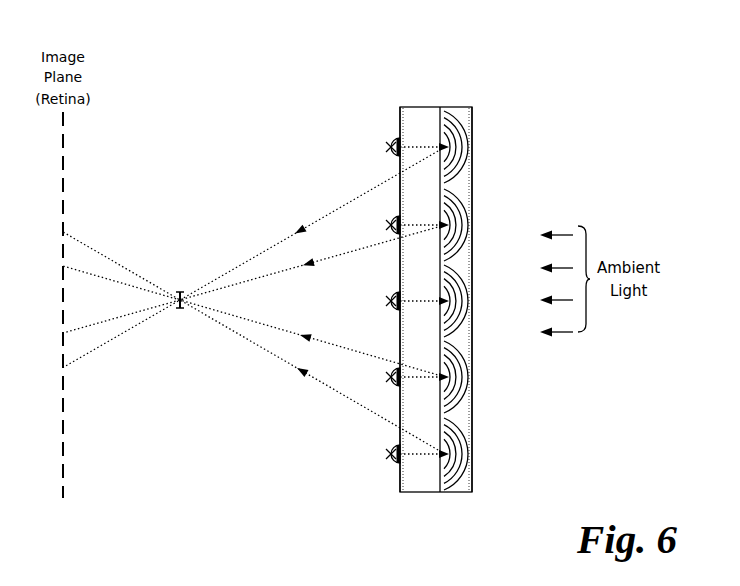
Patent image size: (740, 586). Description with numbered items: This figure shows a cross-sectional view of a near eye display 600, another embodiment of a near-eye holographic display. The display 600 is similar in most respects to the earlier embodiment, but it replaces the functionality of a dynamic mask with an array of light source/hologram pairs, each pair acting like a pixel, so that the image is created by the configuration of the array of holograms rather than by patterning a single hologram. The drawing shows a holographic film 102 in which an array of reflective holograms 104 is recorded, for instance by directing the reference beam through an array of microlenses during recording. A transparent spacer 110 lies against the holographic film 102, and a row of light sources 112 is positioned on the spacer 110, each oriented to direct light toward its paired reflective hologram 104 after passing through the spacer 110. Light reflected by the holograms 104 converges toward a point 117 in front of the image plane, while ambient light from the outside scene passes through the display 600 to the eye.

The near eye display 600 is at (553, 90).
The holographic film 102 is at (472, 488).
The reflective hologram 104 is at (478, 148).
The transparent spacer 110 is at (400, 488).
The light source 112 is at (384, 149).
The focal point 117 is at (180, 292).